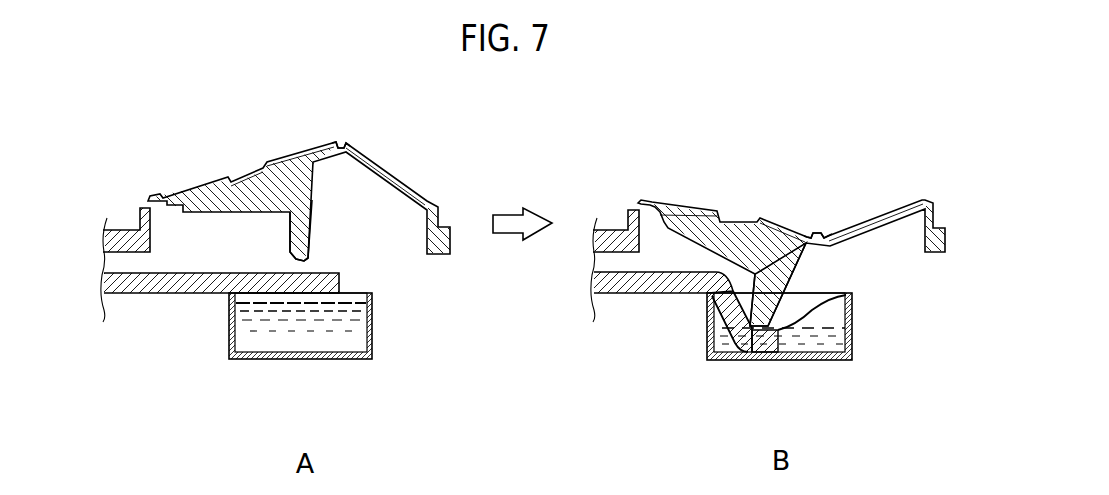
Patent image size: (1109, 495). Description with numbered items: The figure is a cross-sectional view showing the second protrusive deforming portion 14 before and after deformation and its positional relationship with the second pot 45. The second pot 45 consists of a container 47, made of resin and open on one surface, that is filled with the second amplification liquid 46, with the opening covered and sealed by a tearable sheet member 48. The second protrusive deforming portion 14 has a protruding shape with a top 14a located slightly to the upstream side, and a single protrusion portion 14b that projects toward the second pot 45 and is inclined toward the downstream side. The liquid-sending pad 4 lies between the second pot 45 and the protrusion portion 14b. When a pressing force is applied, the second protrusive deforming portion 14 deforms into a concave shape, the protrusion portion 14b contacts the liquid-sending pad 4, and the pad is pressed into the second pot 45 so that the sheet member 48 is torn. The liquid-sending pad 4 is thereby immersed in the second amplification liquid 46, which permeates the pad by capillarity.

The liquid-sending pad 4 is at (143, 294).
The second protrusive deforming portion 14 is at (288, 153).
The top 14a is at (340, 142).
The protrusion portion 14b is at (318, 245).
The second pot 45 is at (359, 378).
The second amplification liquid 46 is at (301, 344).
The container 47 is at (369, 338).
The sheet member 48 is at (350, 301).